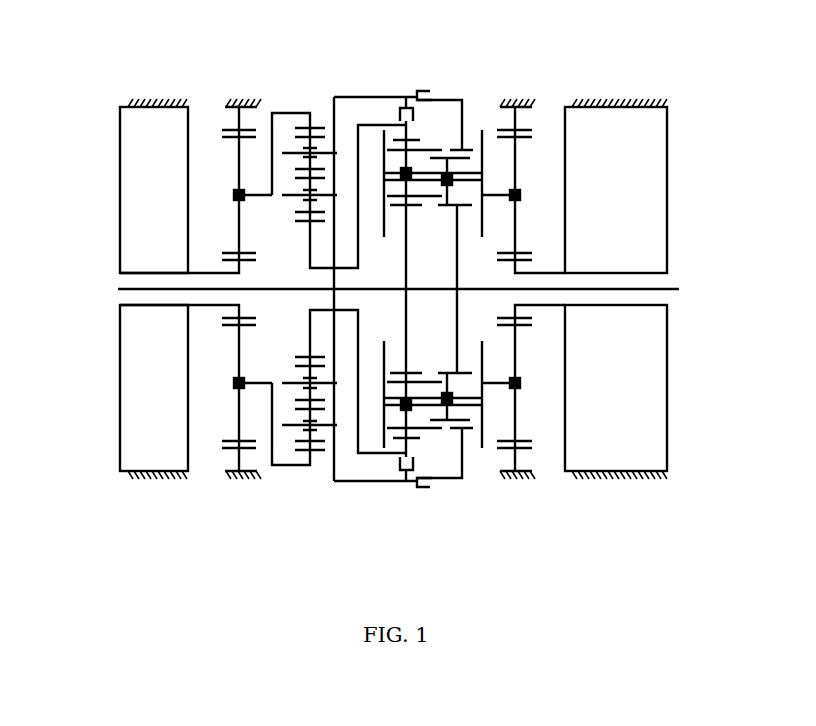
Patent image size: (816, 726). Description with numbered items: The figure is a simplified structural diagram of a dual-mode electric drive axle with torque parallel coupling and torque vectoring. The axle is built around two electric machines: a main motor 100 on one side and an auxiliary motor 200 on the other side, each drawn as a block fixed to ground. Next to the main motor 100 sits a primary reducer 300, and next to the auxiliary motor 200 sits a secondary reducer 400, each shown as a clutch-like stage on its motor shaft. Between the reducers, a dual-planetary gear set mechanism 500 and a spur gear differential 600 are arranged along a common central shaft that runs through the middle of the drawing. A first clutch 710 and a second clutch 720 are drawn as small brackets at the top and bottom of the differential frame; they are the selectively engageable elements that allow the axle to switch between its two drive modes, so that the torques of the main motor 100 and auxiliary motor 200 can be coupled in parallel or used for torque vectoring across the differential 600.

The main motor 100 is at (608, 163).
The auxiliary motor 200 is at (168, 163).
The primary reducer 300 is at (520, 163).
The secondary reducer 400 is at (232, 163).
The dual-planetary gear set mechanism 500 is at (298, 163).
The spur gear differential 600 is at (432, 163).
The first clutch 710 is at (405, 480).
The second clutch 720 is at (428, 487).